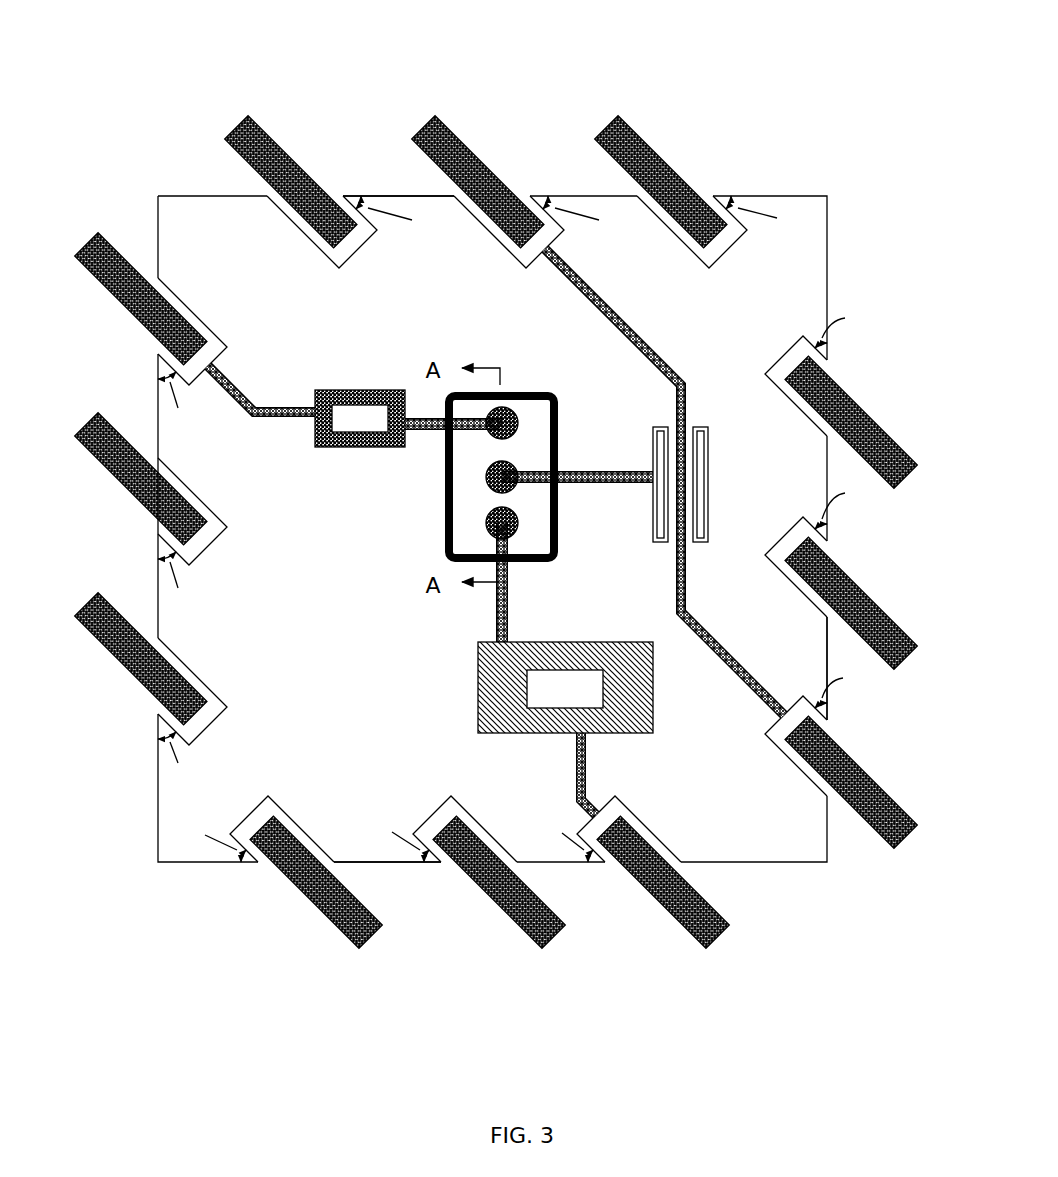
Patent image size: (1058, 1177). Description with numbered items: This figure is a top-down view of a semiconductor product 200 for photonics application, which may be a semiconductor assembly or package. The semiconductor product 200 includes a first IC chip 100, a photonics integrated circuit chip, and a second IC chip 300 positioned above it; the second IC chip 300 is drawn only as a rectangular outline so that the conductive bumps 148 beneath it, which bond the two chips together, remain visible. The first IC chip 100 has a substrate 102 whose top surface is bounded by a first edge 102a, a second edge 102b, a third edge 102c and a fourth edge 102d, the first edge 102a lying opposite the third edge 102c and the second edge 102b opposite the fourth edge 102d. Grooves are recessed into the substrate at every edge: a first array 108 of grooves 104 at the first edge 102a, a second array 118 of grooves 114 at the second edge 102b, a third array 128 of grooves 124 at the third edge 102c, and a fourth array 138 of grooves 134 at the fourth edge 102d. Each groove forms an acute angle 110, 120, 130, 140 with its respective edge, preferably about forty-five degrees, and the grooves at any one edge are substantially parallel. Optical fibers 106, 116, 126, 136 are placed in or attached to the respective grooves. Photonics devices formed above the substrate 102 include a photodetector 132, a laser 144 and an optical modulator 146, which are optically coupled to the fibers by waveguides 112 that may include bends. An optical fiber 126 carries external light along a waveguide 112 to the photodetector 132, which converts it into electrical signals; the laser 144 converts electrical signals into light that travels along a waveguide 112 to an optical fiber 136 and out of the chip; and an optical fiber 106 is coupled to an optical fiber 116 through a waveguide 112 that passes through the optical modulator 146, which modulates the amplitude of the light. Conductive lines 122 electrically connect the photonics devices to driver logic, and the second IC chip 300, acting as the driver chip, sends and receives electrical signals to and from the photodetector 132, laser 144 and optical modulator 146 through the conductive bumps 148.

The IC chip 100 is at (779, 154).
The semiconductor product 200 is at (890, 135).
The second IC chip 300 is at (578, 384).
The substrate 102 is at (376, 700).
The first edge 102a is at (412, 190).
The second edge 102b is at (832, 648).
The third edge 102c is at (378, 872).
The fourth edge 102d is at (155, 582).
The grooves 104 is at (350, 208).
The optical fibers 106 is at (272, 124).
The first array 108 is at (688, 98).
The acute angle 110 is at (586, 214).
The waveguides 112 is at (267, 402).
The grooves 114 is at (767, 380).
The optical fibers 116 is at (880, 428).
The second array 118 is at (721, 484).
The acute angle 120 is at (850, 507).
The conductive lines 122 is at (420, 418).
The grooves 124 is at (260, 852).
The optical fibers 126 is at (360, 946).
The third array 128 is at (315, 958).
The acute angle 130 is at (380, 838).
The photodetector 132 is at (547, 701).
The grooves 134 is at (195, 382).
The optical fibers 136 is at (113, 295).
The fourth array 138 is at (263, 450).
The acute angle 140 is at (180, 580).
The laser 144 is at (343, 430).
The optical modulator 146 is at (652, 440).
The conductive bumps 148 is at (487, 425).